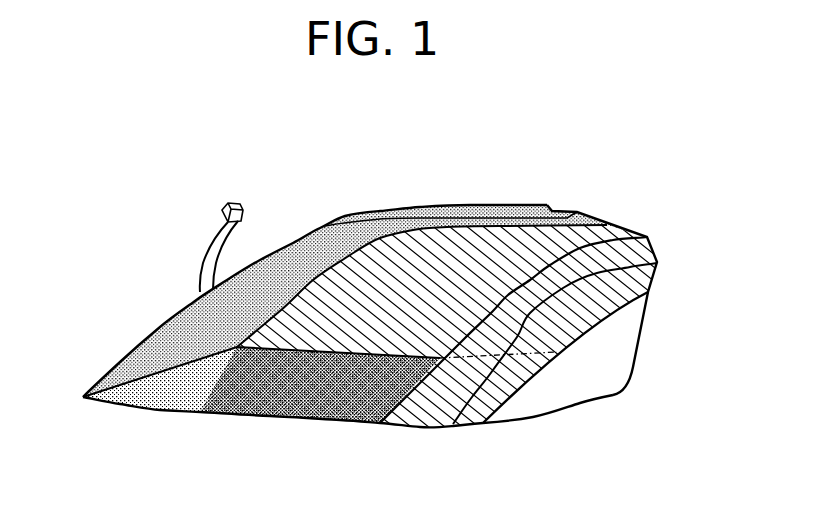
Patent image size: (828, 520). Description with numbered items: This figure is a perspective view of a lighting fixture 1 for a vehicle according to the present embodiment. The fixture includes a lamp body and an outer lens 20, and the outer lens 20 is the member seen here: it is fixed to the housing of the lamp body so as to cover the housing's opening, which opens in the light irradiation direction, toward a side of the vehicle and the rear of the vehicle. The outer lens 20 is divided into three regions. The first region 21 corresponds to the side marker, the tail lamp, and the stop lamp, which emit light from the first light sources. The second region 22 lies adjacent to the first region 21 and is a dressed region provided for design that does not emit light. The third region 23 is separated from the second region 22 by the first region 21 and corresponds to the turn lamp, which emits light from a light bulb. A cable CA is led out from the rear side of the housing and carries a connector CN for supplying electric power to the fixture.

The lighting fixture for a vehicle 1 is at (374, 260).
The outer lens 20 is at (548, 199).
The first region 21 is at (487, 343).
The second region 22 is at (313, 226).
The third region 23 is at (580, 393).
The connector CN is at (244, 211).
The cable CA is at (227, 240).